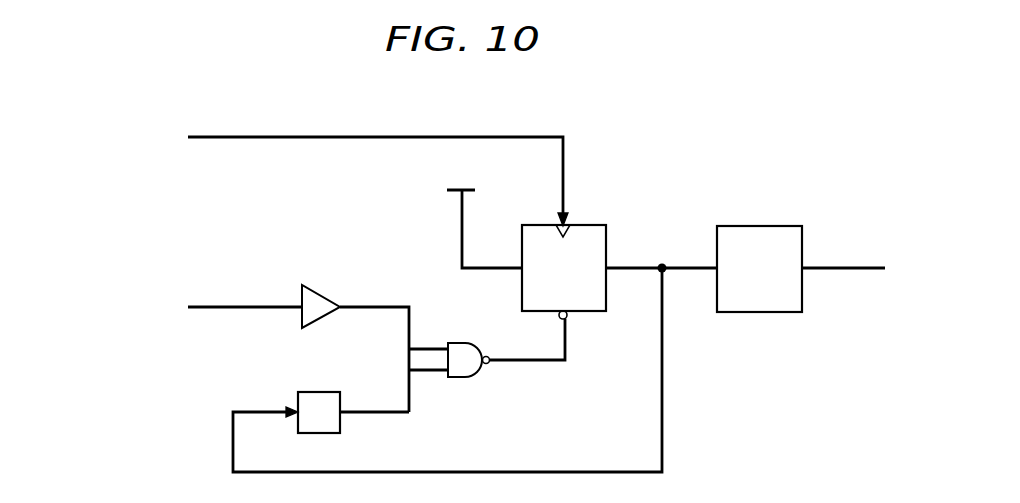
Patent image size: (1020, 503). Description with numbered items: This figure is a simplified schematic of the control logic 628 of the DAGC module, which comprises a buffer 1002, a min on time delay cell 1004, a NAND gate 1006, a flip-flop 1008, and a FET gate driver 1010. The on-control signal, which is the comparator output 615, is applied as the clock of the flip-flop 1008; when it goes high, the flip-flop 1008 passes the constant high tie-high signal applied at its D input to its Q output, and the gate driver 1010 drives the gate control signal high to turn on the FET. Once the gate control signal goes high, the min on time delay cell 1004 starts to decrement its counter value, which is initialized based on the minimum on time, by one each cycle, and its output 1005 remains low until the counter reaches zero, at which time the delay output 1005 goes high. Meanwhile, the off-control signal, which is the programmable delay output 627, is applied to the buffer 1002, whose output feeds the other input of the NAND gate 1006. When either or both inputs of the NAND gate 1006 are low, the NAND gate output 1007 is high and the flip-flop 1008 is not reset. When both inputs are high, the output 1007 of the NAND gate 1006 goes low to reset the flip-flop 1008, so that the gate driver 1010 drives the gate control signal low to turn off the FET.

The control logic 628 is at (478, 93).
The comparator output 615 is at (222, 136).
The programmable delay output 627 is at (222, 305).
The buffer 1002 is at (322, 290).
The min on time delay cell 1004 is at (343, 425).
The delay cell output 1005 is at (412, 398).
The NAND gate 1006 is at (450, 342).
The NAND gate output 1007 is at (527, 362).
The flip-flop 1008 is at (598, 224).
The FET gate driver 1010 is at (760, 225).